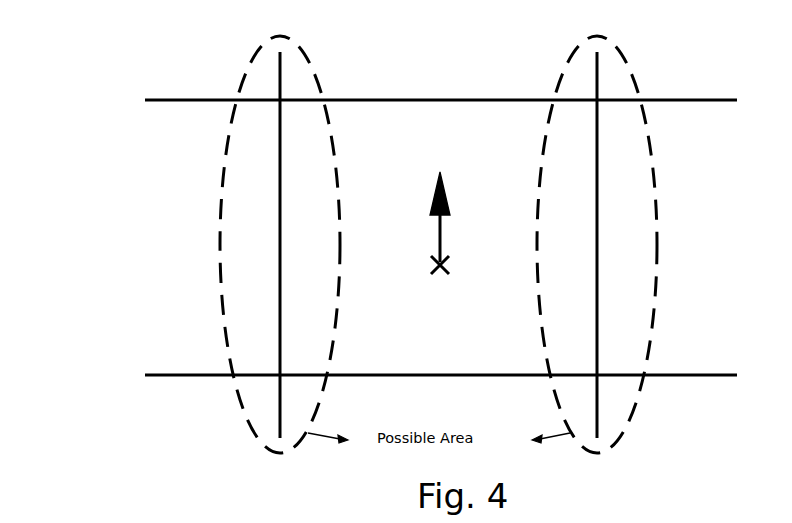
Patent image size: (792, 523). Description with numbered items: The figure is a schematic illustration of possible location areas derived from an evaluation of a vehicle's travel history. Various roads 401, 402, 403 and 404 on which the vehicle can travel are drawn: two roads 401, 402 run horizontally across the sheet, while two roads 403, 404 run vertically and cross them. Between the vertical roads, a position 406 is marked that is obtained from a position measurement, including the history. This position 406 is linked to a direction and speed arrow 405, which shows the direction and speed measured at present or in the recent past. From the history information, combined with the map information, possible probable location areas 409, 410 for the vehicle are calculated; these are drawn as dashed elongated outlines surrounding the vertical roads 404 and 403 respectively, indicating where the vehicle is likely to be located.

The road 401 is at (715, 100).
The road 402 is at (715, 375).
The road 403 is at (597, 218).
The road 404 is at (280, 221).
The direction and speed arrow 405 is at (443, 235).
The position 406 is at (435, 267).
The possible probable location area 409 is at (247, 421).
The possible probable location area 410 is at (630, 423).